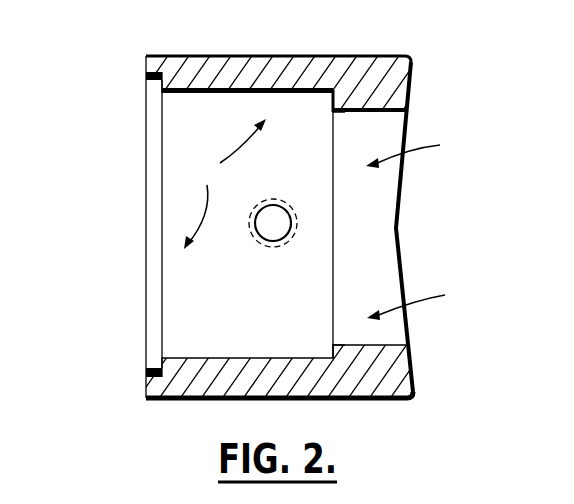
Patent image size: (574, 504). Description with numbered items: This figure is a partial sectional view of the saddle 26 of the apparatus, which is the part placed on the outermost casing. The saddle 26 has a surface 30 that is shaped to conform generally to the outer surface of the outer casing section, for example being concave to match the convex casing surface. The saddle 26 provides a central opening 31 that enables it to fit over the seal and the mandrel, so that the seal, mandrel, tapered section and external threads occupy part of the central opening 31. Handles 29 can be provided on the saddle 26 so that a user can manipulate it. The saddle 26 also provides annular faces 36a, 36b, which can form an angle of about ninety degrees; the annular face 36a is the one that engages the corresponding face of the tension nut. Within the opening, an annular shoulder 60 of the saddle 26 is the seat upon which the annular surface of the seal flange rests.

The saddle 26 is at (285, 56).
The handles 29 is at (270, 232).
The surface 30 is at (410, 90).
The central opening 31 is at (331, 219).
The annular face 36a is at (156, 85).
The annular face 36b is at (147, 77).
The annular shoulder 60 is at (331, 100).